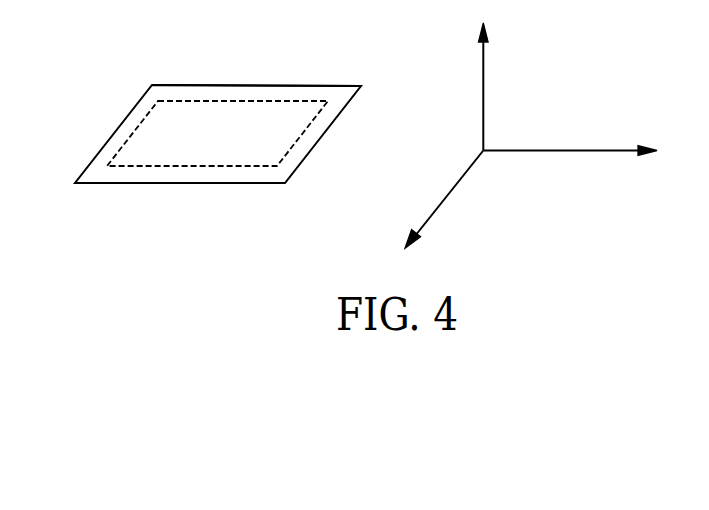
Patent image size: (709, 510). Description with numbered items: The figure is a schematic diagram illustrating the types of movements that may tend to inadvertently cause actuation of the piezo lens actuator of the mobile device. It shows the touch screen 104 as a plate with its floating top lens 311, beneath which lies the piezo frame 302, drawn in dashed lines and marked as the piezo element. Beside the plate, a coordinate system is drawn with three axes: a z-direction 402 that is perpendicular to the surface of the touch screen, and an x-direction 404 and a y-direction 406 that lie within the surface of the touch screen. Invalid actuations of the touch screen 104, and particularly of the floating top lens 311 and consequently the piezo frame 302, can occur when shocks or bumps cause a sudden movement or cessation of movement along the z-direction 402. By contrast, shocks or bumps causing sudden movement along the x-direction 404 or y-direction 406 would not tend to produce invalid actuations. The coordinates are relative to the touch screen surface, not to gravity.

The touch screen 104 is at (308, 70).
The floating top lens 311 is at (259, 85).
The piezo frame 302 is at (132, 137).
The z-direction 402 is at (483, 86).
The x-direction 404 is at (570, 152).
The y-direction 406 is at (445, 198).